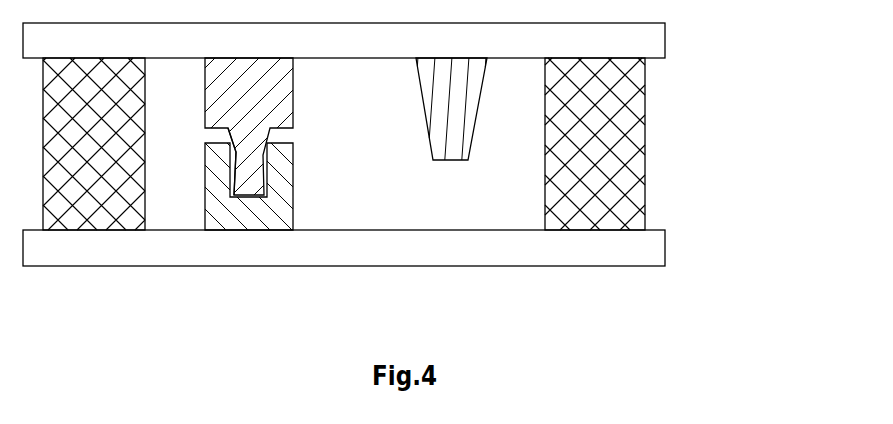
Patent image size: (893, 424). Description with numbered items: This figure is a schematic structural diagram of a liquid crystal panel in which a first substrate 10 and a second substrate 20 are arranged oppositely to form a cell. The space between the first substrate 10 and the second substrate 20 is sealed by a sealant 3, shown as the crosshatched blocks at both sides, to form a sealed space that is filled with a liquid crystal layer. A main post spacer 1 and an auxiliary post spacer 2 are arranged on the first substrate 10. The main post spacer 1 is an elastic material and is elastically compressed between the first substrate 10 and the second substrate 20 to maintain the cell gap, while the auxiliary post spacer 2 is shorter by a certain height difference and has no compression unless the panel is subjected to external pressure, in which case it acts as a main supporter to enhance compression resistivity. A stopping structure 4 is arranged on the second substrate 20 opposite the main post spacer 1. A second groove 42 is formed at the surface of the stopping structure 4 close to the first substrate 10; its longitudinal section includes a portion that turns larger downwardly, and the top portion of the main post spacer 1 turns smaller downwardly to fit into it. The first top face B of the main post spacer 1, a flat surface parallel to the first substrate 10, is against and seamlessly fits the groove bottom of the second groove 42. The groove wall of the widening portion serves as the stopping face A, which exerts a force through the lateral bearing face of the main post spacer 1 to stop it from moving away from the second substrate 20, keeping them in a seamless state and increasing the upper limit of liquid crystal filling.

The first substrate 10 is at (615, 42).
The second substrate 20 is at (615, 247).
The main post spacer 1 is at (293, 85).
The auxiliary post spacer 2 is at (443, 144).
The sealant 3 is at (613, 147).
The stopping structure 4 is at (293, 207).
The second groove 42 is at (226, 136).
The stopping face A is at (262, 182).
The first top face B is at (243, 211).